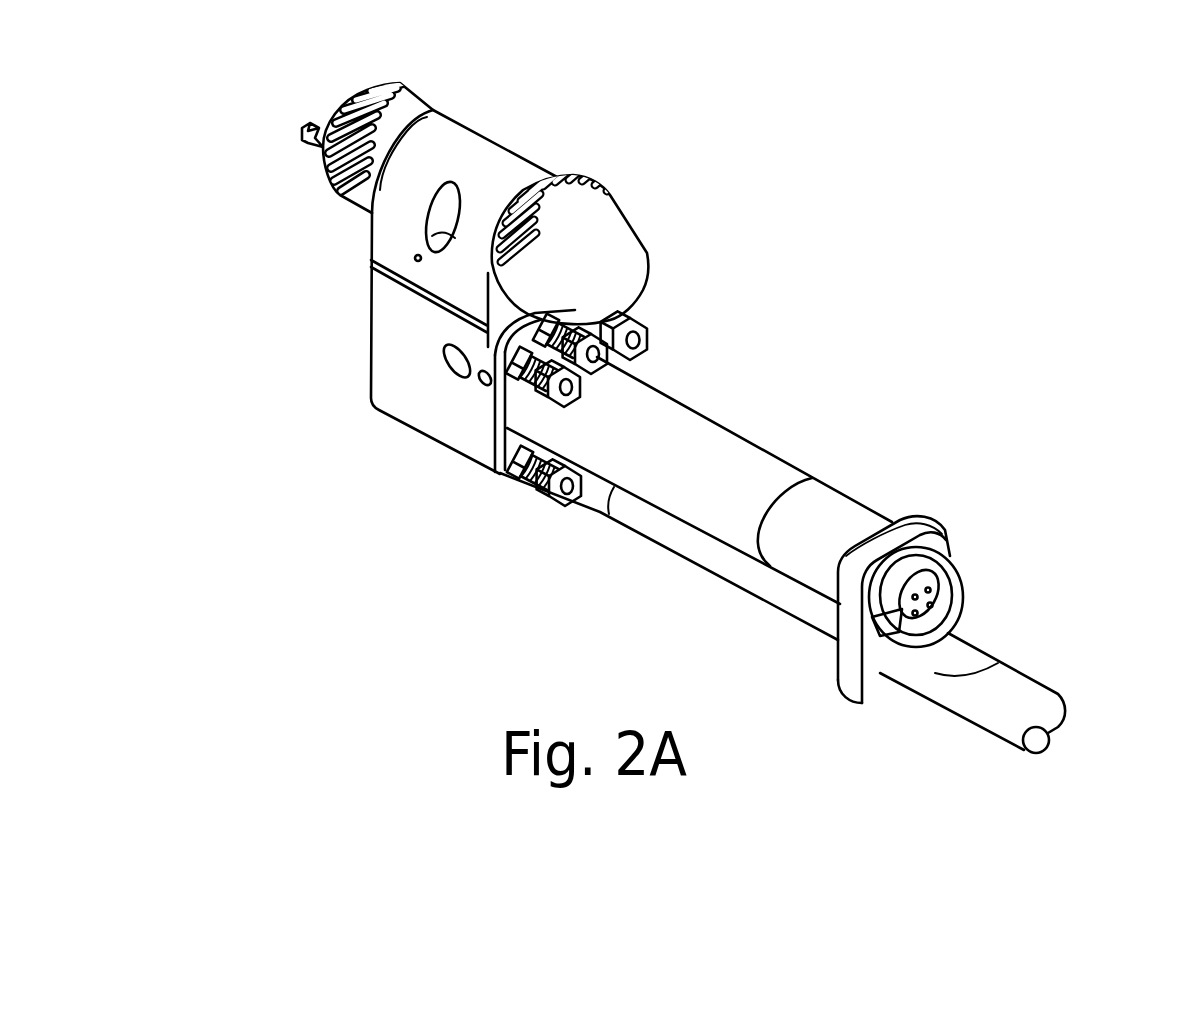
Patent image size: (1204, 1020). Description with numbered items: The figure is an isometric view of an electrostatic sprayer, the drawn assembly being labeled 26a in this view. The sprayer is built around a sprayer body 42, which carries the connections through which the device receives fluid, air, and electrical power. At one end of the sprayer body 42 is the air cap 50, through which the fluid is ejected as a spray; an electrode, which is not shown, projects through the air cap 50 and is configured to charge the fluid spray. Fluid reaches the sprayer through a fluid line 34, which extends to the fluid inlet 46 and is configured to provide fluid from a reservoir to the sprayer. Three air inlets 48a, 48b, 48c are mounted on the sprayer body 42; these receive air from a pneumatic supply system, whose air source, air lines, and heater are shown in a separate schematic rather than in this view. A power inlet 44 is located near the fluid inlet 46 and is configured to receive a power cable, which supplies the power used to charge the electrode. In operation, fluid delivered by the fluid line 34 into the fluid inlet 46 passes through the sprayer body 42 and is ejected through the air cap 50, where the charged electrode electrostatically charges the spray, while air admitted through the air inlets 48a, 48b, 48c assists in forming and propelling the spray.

The sensor assembly 26a is at (793, 207).
The fluid line 34 is at (1014, 688).
The sprayer body 42 is at (515, 161).
The power inlet 44 is at (944, 591).
The fluid inlet 46 is at (599, 497).
The air inlet 48a is at (646, 320).
The air inlet 48b is at (521, 389).
The air inlet 48c is at (603, 352).
The air cap 50 is at (293, 130).